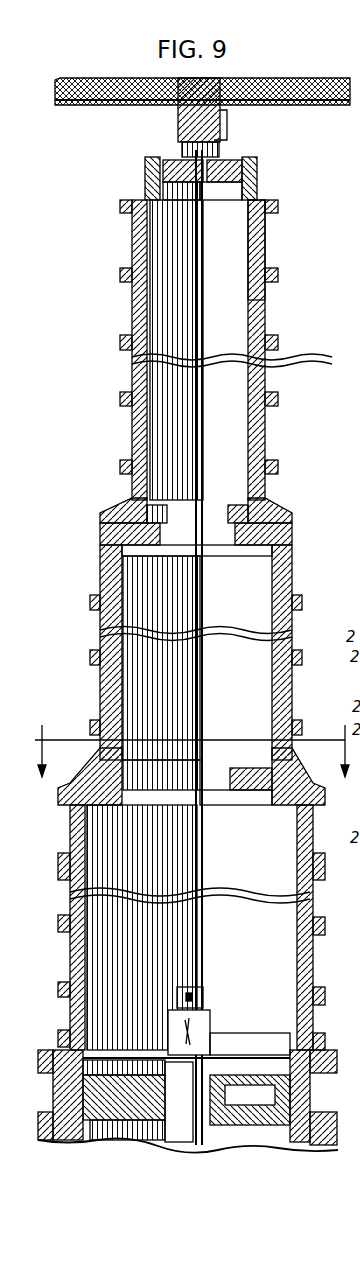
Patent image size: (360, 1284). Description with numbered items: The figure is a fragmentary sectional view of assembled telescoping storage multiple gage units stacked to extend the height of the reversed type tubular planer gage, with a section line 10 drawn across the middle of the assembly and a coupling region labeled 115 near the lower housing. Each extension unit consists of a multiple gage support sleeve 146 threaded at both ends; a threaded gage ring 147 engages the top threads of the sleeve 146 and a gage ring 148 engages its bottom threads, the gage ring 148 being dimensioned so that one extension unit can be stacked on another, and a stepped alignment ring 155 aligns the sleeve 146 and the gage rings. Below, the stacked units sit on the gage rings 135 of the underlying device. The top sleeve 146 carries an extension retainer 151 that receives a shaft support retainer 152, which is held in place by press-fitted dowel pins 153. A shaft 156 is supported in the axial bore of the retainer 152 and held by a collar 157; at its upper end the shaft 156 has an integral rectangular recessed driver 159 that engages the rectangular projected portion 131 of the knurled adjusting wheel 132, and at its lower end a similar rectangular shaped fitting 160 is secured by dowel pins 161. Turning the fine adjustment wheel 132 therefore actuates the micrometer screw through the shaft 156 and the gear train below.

The knurled adjusting wheel 132 is at (321, 82).
The rectangular projected portion 131 is at (186, 117).
The rectangular recessed driver 159 is at (222, 130).
The extension retainer 151 is at (147, 188).
The shaft support retainer 152 is at (170, 170).
The dowel pins 153 is at (240, 166).
The collar 157 is at (240, 195).
The multiple gage support sleeve 146 is at (143, 250).
The threaded gage ring 147 is at (265, 248).
The shaft 156 is at (195, 305).
The gage ring 148 is at (258, 486).
The stepped alignment ring 155 is at (272, 530).
The section line 10 is at (189, 758).
The coupling 115 is at (313, 818).
The gage rings 135 is at (76, 954).
The dowel pins 161 is at (203, 993).
The rectangular shaped fitting 160 is at (206, 1002).